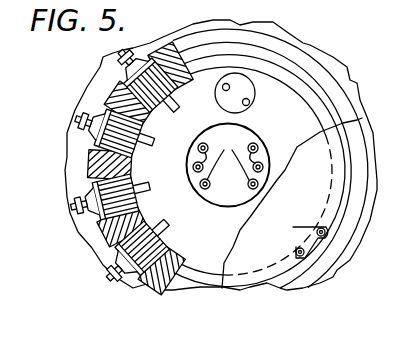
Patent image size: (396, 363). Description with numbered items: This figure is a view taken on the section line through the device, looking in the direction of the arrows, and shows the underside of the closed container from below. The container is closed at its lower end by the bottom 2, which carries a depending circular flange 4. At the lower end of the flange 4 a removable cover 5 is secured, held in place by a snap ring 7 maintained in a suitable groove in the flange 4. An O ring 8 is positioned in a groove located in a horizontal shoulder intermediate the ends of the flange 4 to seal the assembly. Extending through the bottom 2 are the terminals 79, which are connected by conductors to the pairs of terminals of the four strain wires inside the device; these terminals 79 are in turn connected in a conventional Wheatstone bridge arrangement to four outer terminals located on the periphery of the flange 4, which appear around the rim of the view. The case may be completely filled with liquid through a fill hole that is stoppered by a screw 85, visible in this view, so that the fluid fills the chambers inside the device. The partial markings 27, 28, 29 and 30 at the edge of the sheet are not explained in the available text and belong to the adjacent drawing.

The bottom 2 is at (228, 171).
The depending circular flange 4 is at (323, 71).
The snap ring 7 is at (295, 247).
The O ring 8 is at (288, 63).
The terminals 79 is at (250, 146).
The screw 85 is at (217, 98).
The lead 27 is at (165, 6).
The lead 28 is at (284, 6).
The lead 29 is at (239, 6).
The lead 30 is at (326, 0).
The removable cover 5 is at (3, 21).